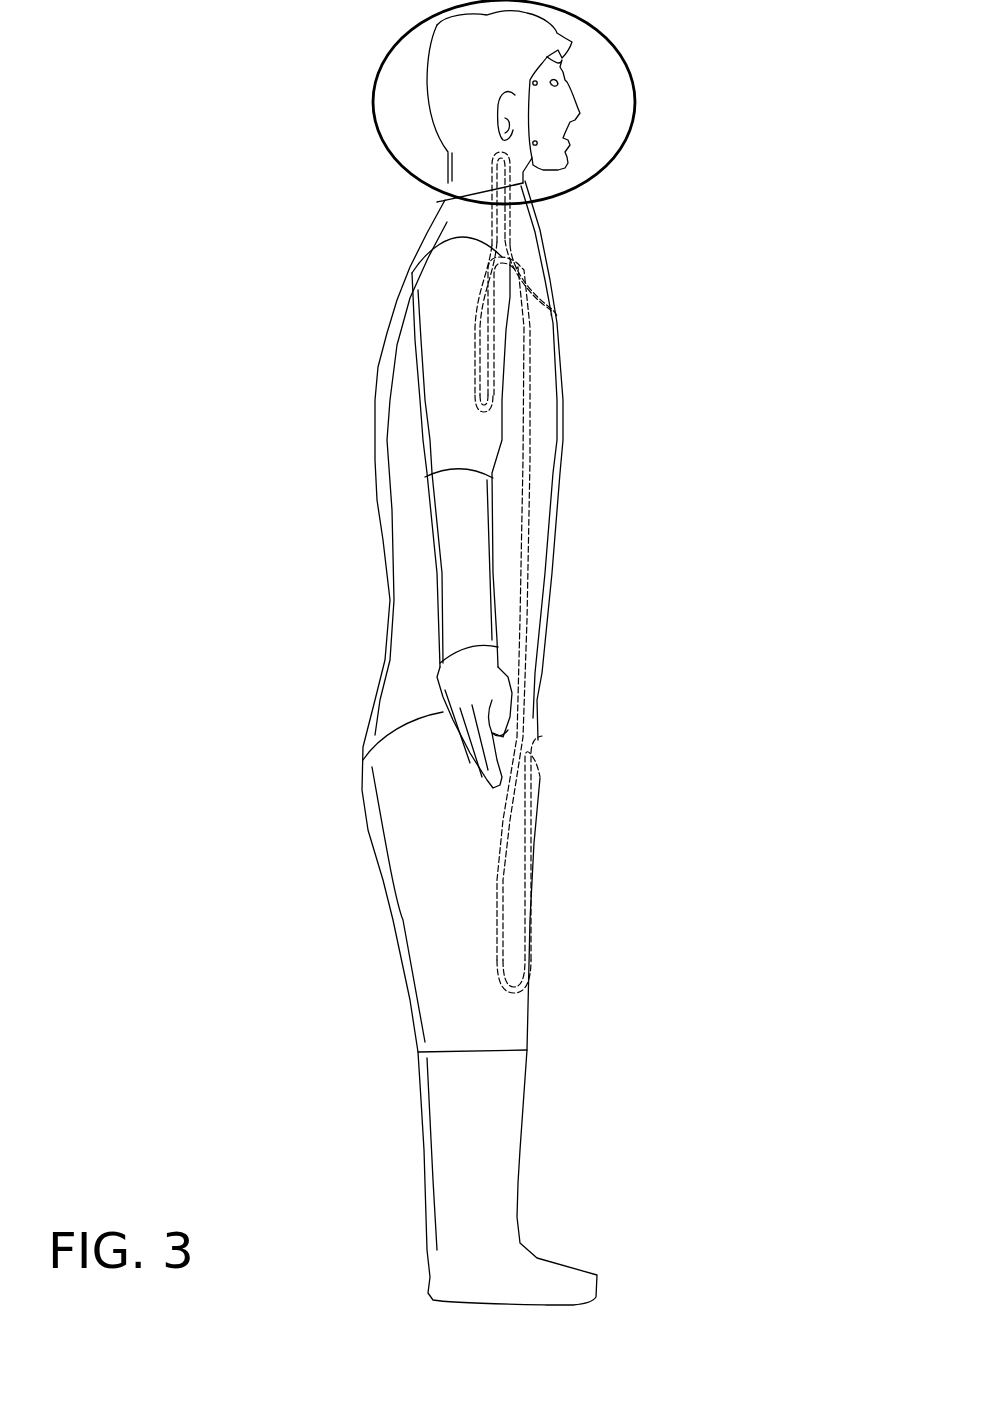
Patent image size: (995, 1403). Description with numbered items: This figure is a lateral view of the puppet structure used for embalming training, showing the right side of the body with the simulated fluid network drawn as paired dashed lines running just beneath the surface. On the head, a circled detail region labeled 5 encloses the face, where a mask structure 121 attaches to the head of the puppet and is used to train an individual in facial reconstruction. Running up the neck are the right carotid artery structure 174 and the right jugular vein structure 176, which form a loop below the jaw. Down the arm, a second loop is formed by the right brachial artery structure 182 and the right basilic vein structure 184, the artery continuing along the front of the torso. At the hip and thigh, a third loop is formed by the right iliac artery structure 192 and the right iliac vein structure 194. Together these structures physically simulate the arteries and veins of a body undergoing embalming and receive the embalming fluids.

The user head 5 is at (620, 50).
The mask structure 121 is at (560, 110).
The right carotid artery structure 174 is at (523, 183).
The right jugular vein structure 176 is at (492, 224).
The right brachial artery structure 182 is at (493, 345).
The right basilic vein structure 184 is at (478, 308).
The right iliac artery structure 192 is at (527, 842).
The right iliac vein structure 194 is at (497, 880).